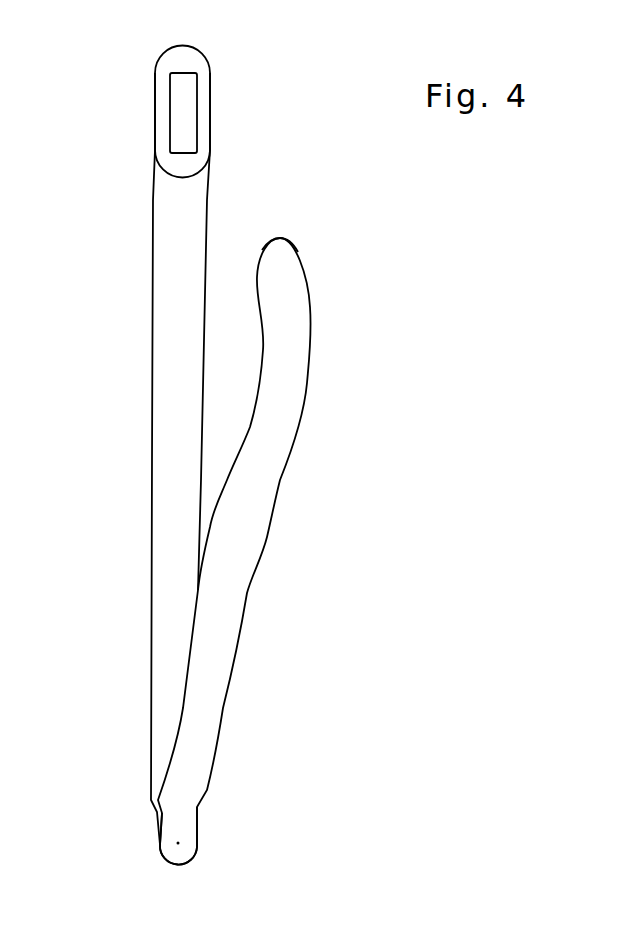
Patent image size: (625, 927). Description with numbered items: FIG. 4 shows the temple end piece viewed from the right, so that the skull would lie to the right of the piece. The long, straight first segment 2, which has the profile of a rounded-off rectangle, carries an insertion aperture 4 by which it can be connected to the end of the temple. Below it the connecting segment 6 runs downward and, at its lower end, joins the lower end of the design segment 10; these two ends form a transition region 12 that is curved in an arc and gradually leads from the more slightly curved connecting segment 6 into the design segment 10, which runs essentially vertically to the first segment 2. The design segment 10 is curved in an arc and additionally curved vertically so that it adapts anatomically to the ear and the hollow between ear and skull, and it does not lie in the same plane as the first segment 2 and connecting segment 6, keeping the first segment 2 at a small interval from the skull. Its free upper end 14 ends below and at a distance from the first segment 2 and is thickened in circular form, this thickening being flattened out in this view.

The first segment 2 is at (198, 63).
The insertion aperture 4 is at (190, 132).
The connecting segment 6 is at (134, 401).
The design segment 10 is at (291, 492).
The transition region 12 is at (170, 835).
The free upper end 14 is at (283, 257).